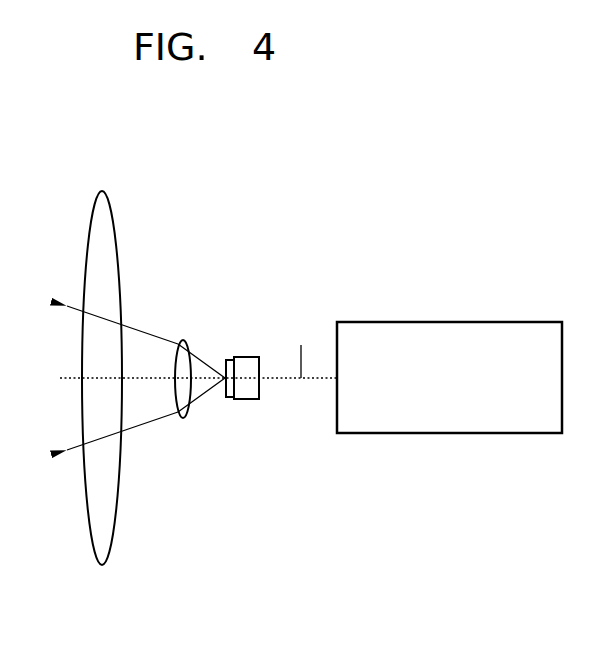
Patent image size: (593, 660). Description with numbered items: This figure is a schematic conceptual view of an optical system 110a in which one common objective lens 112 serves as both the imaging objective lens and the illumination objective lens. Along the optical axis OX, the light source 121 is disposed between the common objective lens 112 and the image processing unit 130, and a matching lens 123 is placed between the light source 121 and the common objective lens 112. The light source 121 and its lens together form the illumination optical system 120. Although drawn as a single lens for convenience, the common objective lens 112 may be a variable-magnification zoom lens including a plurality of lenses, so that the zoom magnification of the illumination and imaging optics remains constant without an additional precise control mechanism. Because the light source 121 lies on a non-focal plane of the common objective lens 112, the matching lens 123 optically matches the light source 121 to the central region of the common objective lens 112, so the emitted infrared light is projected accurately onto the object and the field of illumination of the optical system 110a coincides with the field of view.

The optical system 110a is at (160, 537).
The common objective lens 112 is at (91, 246).
The illumination optical system 120 is at (167, 273).
The light source 121 is at (243, 357).
The matching lens 123 is at (183, 340).
The image processing unit 130 is at (450, 322).